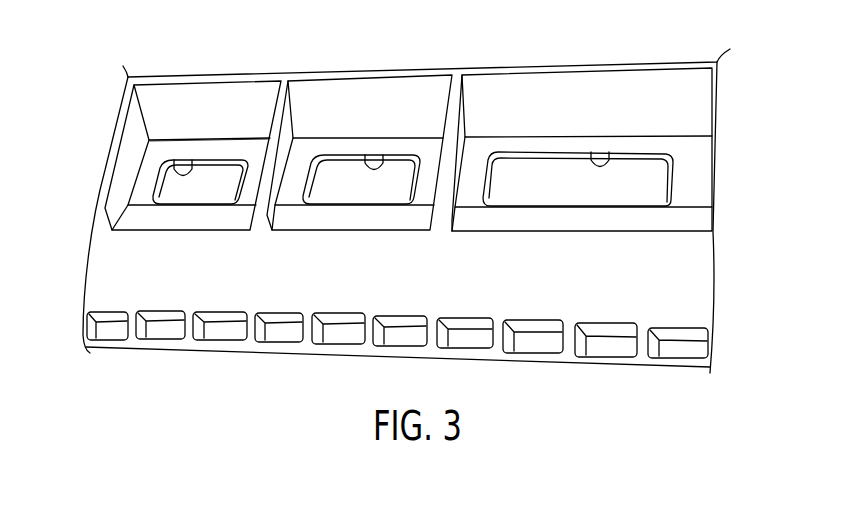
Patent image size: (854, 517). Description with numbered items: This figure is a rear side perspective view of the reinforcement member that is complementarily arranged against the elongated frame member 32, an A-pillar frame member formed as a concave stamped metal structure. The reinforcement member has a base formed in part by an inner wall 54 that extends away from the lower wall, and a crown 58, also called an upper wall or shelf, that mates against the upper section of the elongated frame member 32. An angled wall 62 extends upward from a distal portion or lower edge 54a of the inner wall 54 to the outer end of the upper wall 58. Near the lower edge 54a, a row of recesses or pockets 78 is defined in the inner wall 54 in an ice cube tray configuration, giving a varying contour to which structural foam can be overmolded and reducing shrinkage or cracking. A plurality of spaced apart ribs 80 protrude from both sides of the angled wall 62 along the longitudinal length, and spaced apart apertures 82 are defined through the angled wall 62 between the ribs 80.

The elongated frame member 32 is at (92, 135).
The inner wall 54 is at (398, 359).
The distal portion of the inner wall 54a is at (615, 362).
The crown 58 is at (428, 98).
The angled wall 62 is at (222, 152).
The recesses 78 is at (401, 340).
The ribs 80 is at (282, 155).
The apertures 82 is at (187, 177).